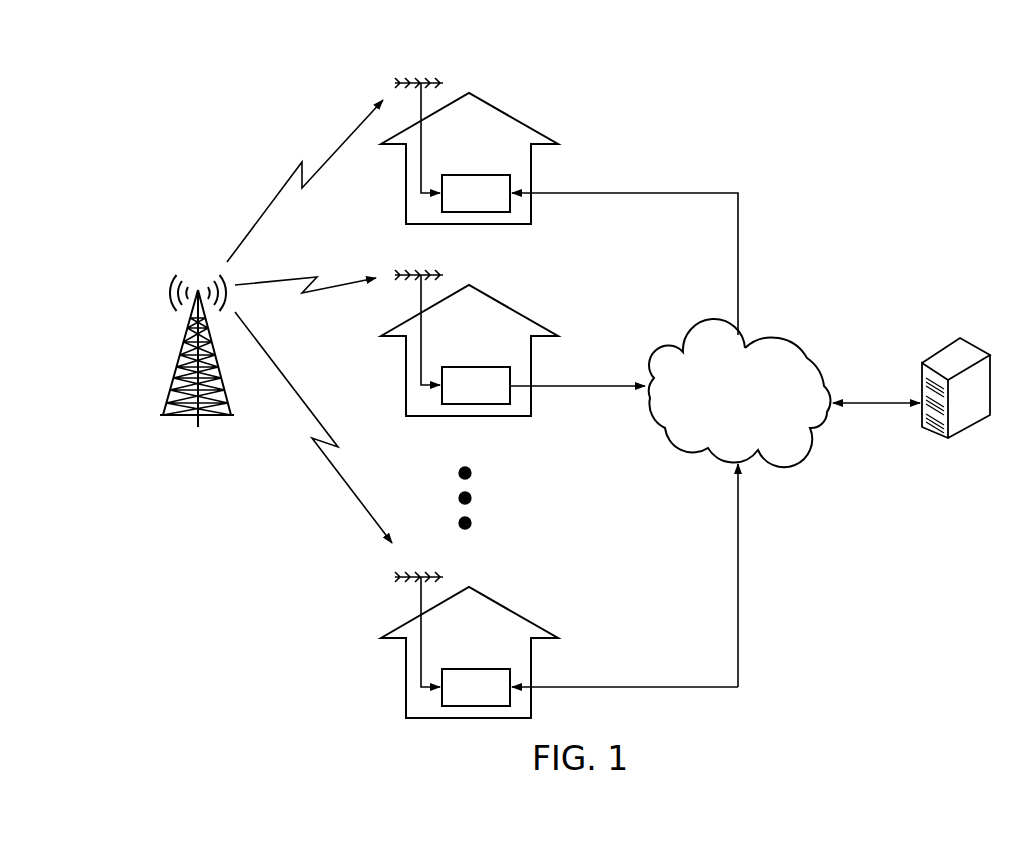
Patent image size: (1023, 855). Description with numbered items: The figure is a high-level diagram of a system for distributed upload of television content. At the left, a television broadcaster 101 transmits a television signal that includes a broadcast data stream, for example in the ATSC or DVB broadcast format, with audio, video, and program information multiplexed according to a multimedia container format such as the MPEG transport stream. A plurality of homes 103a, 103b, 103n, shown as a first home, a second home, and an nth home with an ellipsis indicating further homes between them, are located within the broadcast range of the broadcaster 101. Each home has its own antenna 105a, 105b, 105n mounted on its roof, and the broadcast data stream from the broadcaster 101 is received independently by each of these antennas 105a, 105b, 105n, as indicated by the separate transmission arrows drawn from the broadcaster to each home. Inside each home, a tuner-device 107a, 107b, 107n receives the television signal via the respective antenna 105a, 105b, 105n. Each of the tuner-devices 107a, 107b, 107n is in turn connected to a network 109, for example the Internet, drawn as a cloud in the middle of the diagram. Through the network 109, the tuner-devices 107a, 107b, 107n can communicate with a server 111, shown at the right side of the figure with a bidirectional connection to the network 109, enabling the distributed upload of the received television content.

The television broadcaster 101 is at (190, 418).
The home 103a is at (522, 135).
The home 103b is at (474, 347).
The home 103n is at (474, 649).
The antenna 105a is at (445, 81).
The antenna 105b is at (455, 315).
The antenna 105n is at (455, 617).
The tuner-device 107a is at (476, 193).
The tuner-device 107b is at (476, 385).
The tuner-device 107n is at (476, 687).
The network 109 is at (782, 348).
The server 111 is at (933, 434).